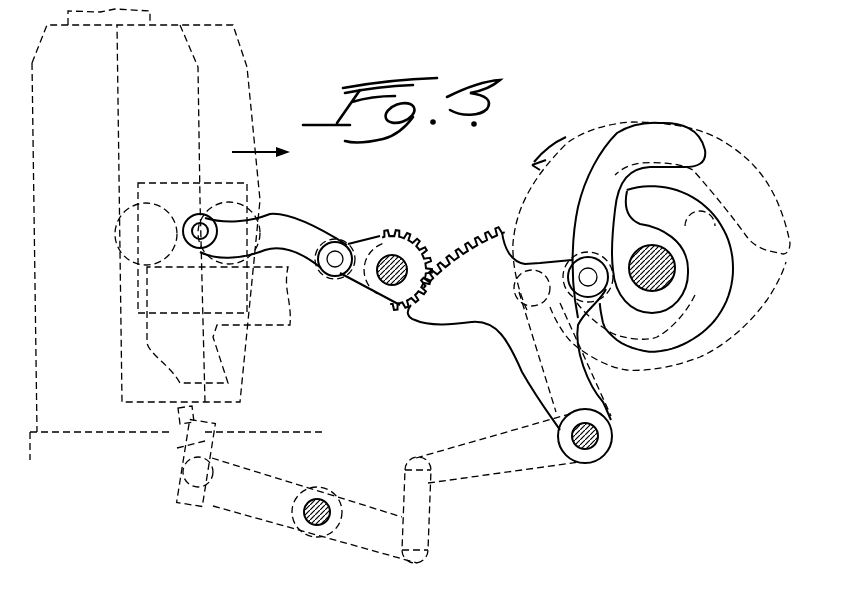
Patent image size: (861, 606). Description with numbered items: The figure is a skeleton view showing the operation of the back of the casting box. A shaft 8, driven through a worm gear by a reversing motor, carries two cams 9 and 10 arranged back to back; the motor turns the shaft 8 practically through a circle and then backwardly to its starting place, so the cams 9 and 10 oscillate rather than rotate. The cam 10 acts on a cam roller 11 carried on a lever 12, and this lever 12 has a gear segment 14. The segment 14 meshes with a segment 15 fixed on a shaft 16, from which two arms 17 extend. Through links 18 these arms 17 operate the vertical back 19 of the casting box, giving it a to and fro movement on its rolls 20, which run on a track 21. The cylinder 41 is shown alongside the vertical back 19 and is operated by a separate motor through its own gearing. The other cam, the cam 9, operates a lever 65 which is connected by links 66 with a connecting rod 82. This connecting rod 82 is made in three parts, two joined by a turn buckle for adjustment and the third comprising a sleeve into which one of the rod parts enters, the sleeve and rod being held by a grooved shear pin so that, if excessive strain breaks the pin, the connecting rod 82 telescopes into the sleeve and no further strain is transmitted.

The shaft 8 is at (655, 267).
The cam 9 is at (758, 180).
The cam 10 is at (603, 150).
The cam roller 11 is at (580, 259).
The lever 12 is at (531, 269).
The gear segment 14 is at (463, 240).
The segment 15 is at (398, 232).
The shaft 16 is at (388, 278).
The arms 17 is at (344, 243).
The links 18 is at (290, 224).
The vertical back 19 is at (243, 78).
The rolls 20 is at (204, 212).
The track 21 is at (281, 303).
The cylinder 41 is at (38, 270).
The lever 65 is at (523, 366).
The links 66 is at (264, 517).
The connecting rod 82 is at (180, 418).